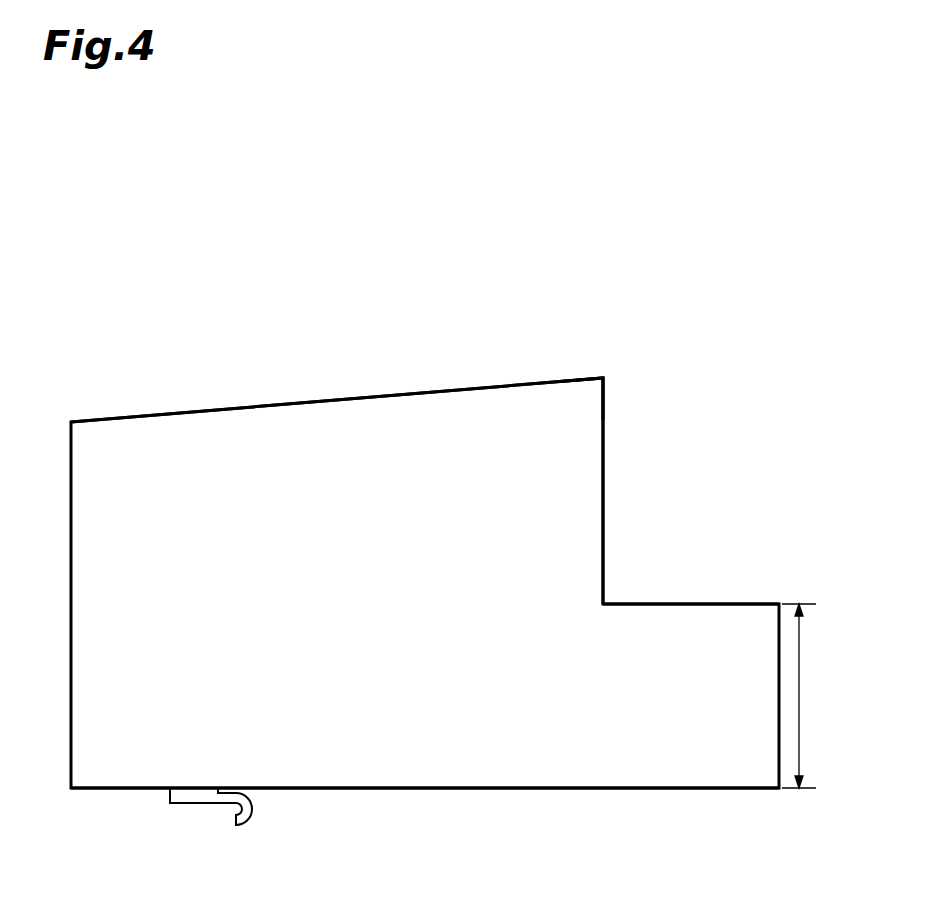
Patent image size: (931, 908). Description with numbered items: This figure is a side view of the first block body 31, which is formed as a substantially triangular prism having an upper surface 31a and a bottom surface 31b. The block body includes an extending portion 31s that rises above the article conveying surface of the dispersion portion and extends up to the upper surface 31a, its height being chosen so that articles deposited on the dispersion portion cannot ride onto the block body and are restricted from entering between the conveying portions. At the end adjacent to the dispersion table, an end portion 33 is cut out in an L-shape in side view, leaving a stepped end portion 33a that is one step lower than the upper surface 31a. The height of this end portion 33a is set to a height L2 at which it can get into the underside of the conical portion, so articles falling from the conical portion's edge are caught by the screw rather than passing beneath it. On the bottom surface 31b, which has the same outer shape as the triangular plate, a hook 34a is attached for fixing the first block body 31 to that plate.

The first block body 31 is at (615, 232).
The extending portion 31s is at (322, 428).
The upper surface 31a is at (568, 378).
The end portion 33 is at (572, 490).
The end portion 33a is at (722, 640).
The bottom surface 31b is at (569, 790).
The hook 34a is at (193, 798).
The height L2 is at (806, 696).